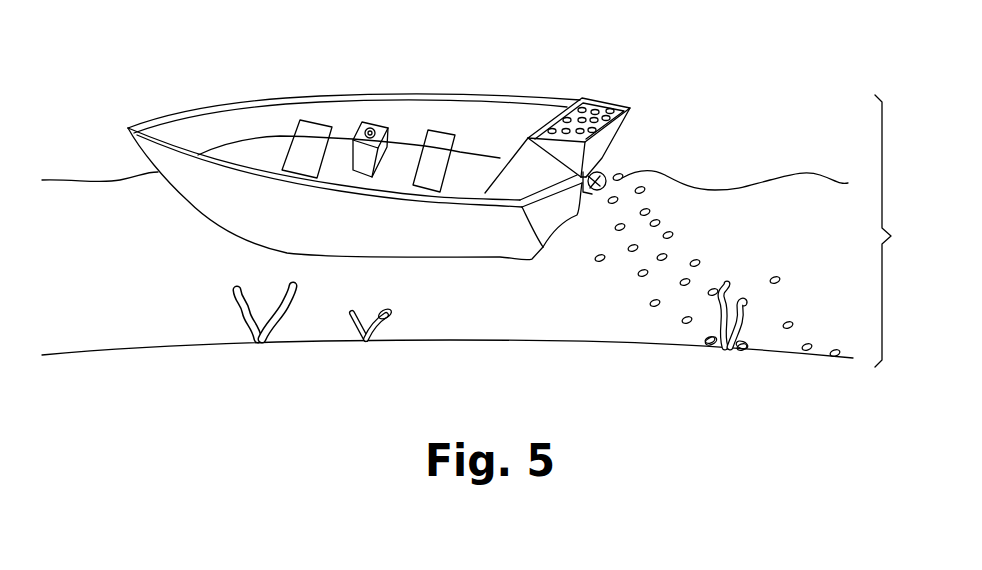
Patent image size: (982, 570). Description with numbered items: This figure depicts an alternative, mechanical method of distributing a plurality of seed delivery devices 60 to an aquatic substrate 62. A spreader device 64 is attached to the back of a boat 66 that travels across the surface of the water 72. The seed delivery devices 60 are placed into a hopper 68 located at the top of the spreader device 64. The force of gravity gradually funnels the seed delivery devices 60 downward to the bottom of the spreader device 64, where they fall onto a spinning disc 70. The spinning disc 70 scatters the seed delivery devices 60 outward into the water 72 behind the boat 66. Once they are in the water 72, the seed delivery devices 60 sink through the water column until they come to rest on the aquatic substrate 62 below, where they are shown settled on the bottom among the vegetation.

The seed delivery devices 60 is at (891, 236).
The aquatic substrate 62 is at (567, 341).
The spreader device 64 is at (618, 103).
The boat 66 is at (362, 232).
The hopper 68 is at (604, 99).
The spinning disc 70 is at (610, 180).
The water 72 is at (815, 236).